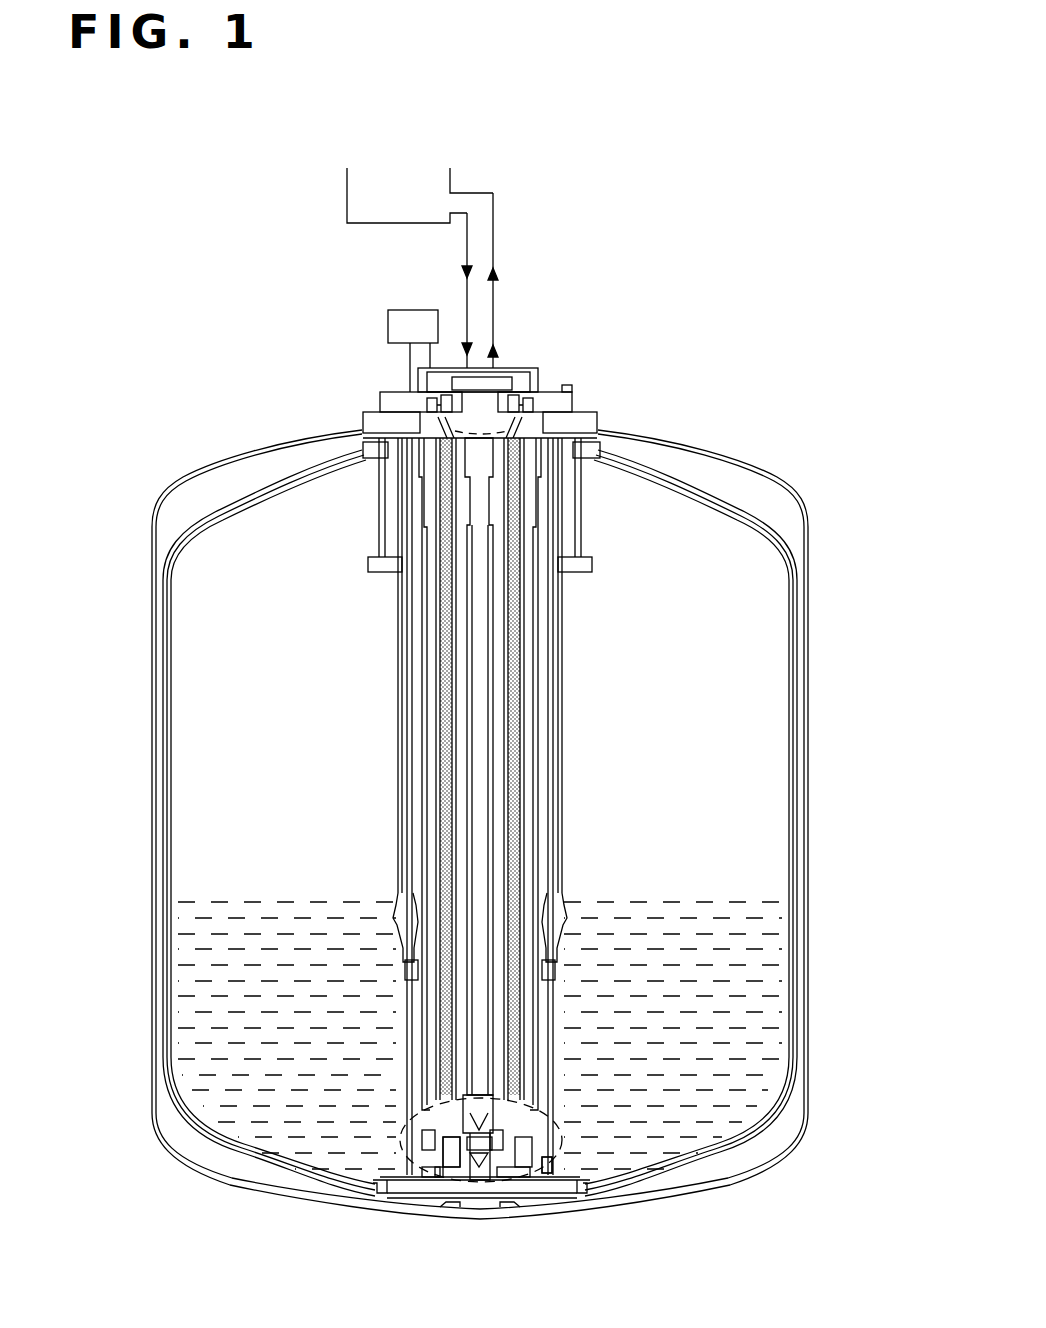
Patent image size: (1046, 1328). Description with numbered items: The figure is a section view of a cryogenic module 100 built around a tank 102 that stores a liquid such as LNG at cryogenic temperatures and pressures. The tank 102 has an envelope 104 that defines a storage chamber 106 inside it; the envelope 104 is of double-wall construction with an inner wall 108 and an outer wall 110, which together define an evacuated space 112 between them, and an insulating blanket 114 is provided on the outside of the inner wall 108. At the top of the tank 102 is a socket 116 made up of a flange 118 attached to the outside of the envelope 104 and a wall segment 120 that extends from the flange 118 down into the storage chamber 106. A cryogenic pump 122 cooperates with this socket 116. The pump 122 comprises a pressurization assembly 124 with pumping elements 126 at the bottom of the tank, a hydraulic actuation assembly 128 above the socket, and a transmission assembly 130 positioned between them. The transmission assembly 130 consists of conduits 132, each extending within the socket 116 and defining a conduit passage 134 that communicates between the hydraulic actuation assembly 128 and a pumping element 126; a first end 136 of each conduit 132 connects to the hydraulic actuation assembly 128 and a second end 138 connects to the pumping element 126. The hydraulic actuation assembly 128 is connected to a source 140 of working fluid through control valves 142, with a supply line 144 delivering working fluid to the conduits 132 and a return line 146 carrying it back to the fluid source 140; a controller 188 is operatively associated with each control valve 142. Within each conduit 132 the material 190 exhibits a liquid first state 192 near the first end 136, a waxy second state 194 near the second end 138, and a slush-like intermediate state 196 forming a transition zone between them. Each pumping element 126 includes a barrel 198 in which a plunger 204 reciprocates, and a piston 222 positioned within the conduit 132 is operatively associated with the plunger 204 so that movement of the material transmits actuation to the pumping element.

The cryogenic module 100 is at (705, 106).
The tank 102 is at (668, 430).
The envelope 104 is at (811, 537).
The storage chamber 106 is at (690, 656).
The inner wall 108 is at (787, 833).
The outer wall 110 is at (805, 625).
The evacuated space 112 is at (797, 487).
The insulating blanket 114 is at (777, 1107).
The socket 116 is at (566, 612).
The flange 118 is at (590, 415).
The wall segment 120 is at (560, 870).
The cryogenic pump 122 is at (300, 330).
The pressurization assembly 124 is at (404, 1164).
The pumping element 126 is at (393, 1137).
The hydraulic actuation assembly 128 is at (526, 370).
The transmission assembly 130 is at (440, 1101).
The conduit 132 is at (433, 785).
The conduit passage 134 is at (438, 716).
The first end 136 is at (440, 455).
The second end 138 is at (442, 1090).
The fluid source 140 is at (347, 185).
The control valve 142 is at (436, 393).
The supply line 144 is at (465, 250).
The return line 146 is at (493, 283).
The controller 188 is at (398, 338).
The material 190 is at (440, 651).
The first state 192 is at (447, 505).
The second state 194 is at (515, 1027).
The intermediate state 196 is at (445, 747).
The barrel 198 is at (537, 1147).
The plunger 204 is at (445, 1138).
The piston 222 is at (437, 1126).